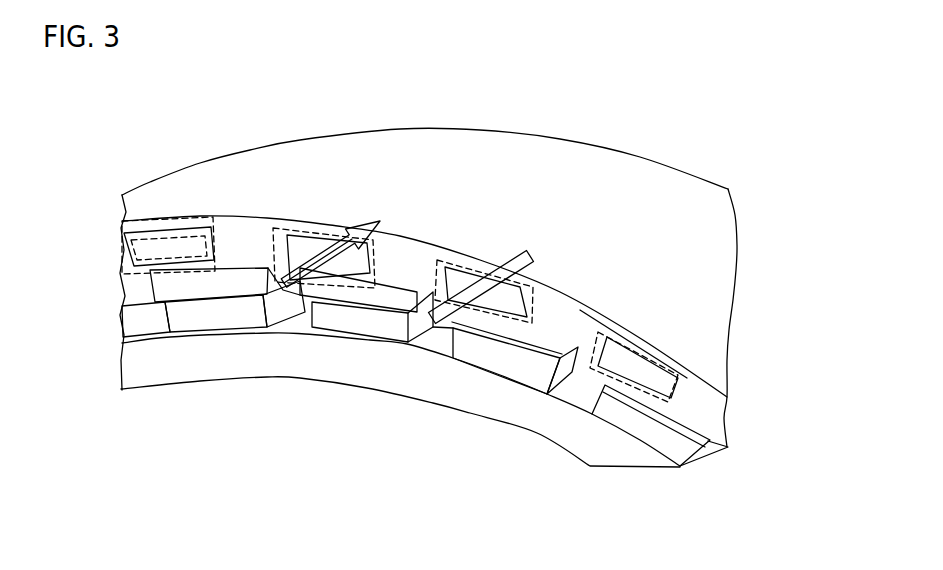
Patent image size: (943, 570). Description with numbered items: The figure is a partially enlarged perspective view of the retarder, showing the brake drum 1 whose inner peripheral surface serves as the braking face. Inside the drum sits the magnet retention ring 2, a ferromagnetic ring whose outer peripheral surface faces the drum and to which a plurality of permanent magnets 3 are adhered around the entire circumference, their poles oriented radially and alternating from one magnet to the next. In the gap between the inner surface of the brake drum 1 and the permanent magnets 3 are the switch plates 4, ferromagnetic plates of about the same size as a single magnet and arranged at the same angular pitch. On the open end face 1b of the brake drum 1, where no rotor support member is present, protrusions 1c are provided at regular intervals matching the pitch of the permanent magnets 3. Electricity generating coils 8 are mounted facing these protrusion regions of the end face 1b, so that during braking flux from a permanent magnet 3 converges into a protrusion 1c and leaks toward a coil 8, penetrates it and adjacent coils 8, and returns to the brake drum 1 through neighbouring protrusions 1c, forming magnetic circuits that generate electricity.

The brake drum 1 is at (706, 167).
The end face 1b is at (723, 418).
The protrusions 1c is at (212, 228).
The magnet retention ring 2 is at (606, 459).
The permanent magnets 3 is at (338, 323).
The switch plates 4 is at (390, 300).
The electricity generating coils 8 is at (170, 218).